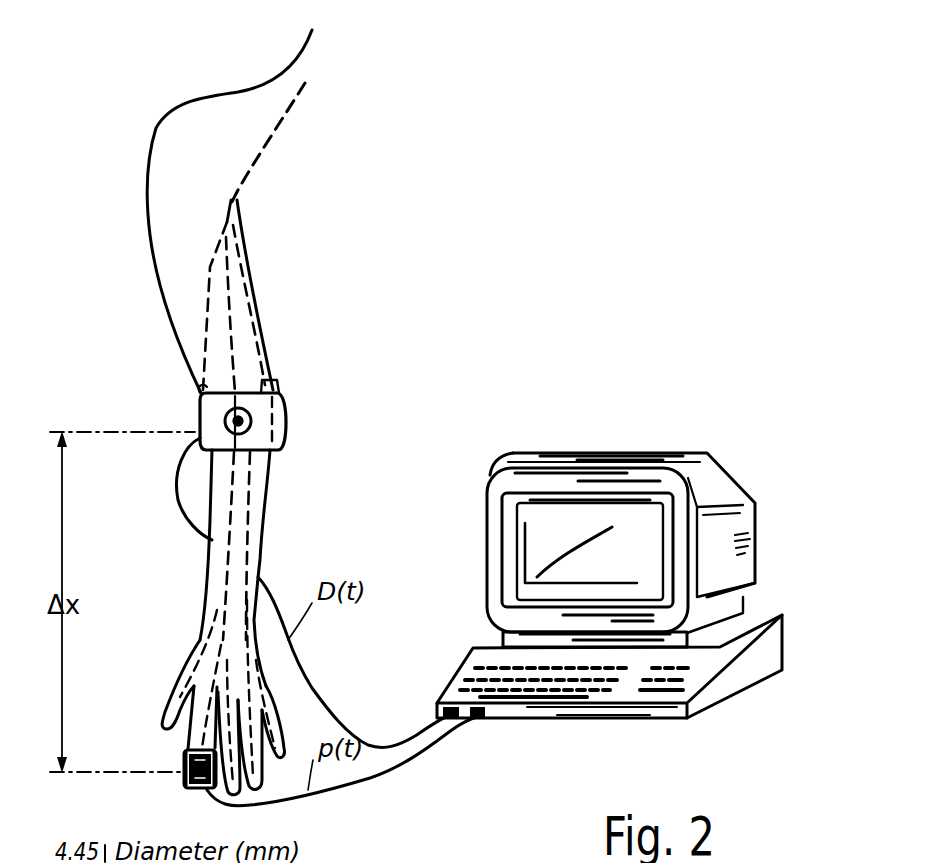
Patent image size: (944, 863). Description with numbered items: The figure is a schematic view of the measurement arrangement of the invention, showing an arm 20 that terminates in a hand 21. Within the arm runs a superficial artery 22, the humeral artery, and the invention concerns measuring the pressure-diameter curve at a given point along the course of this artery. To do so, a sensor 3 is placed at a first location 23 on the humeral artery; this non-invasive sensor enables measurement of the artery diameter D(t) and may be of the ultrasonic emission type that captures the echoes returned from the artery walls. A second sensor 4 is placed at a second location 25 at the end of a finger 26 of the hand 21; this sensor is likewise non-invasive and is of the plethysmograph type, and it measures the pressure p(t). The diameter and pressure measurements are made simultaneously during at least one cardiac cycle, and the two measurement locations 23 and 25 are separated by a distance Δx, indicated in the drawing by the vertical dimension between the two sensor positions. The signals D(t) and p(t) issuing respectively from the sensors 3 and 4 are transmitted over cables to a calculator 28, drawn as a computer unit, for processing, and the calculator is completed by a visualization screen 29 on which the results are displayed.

The superficial artery 22 is at (222, 316).
The first location 23 is at (219, 422).
The sensor 3 is at (224, 432).
The arm 20 is at (290, 452).
The hand 21 is at (284, 711).
The sensor 4 is at (185, 767).
The second location 25 is at (185, 771).
The finger 26 is at (185, 785).
The calculator 28 is at (732, 680).
The visualization screen 29 is at (643, 520).